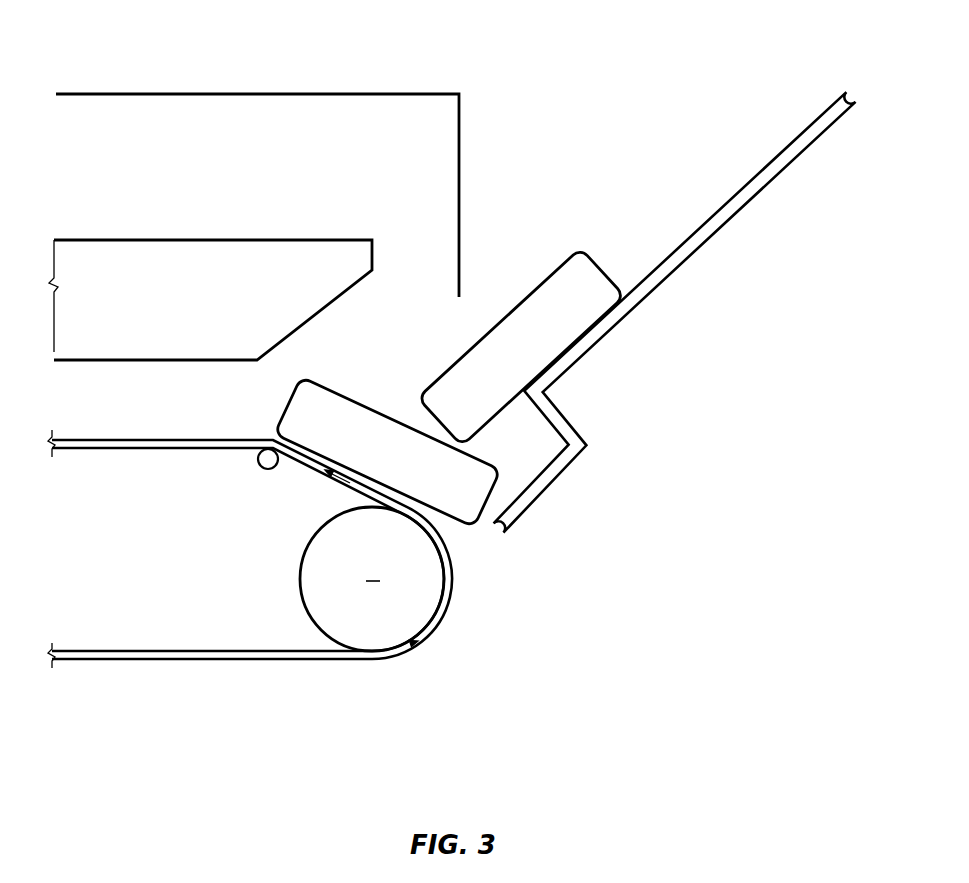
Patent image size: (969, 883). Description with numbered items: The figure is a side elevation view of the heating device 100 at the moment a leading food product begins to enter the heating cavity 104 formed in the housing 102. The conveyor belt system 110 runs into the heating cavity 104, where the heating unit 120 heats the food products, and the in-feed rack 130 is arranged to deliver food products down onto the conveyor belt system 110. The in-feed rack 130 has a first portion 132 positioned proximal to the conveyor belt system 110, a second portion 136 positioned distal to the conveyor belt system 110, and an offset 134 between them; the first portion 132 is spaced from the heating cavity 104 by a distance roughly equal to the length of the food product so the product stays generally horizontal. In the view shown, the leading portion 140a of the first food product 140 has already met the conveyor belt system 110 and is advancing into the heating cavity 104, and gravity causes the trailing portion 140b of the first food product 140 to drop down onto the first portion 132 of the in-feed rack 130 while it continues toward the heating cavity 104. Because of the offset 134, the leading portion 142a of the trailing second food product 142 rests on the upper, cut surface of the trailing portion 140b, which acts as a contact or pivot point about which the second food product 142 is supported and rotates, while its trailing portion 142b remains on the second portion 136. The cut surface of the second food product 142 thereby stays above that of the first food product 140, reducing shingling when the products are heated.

The heating device 100 is at (462, 671).
The housing 102 is at (306, 93).
The heating cavity 104 is at (146, 401).
The conveyor belt system 110 is at (245, 663).
The heating unit 120 is at (307, 239).
The in-feed rack 130 is at (662, 281).
The first portion 132 is at (560, 476).
The offset 134 is at (571, 426).
The second portion 136 is at (797, 164).
The first food product 140 is at (381, 414).
The leading portion 140a is at (309, 375).
The trailing portion 140b is at (468, 533).
The second food product 142 is at (497, 325).
The leading portion 142a is at (424, 372).
The trailing portion 142b is at (563, 245).